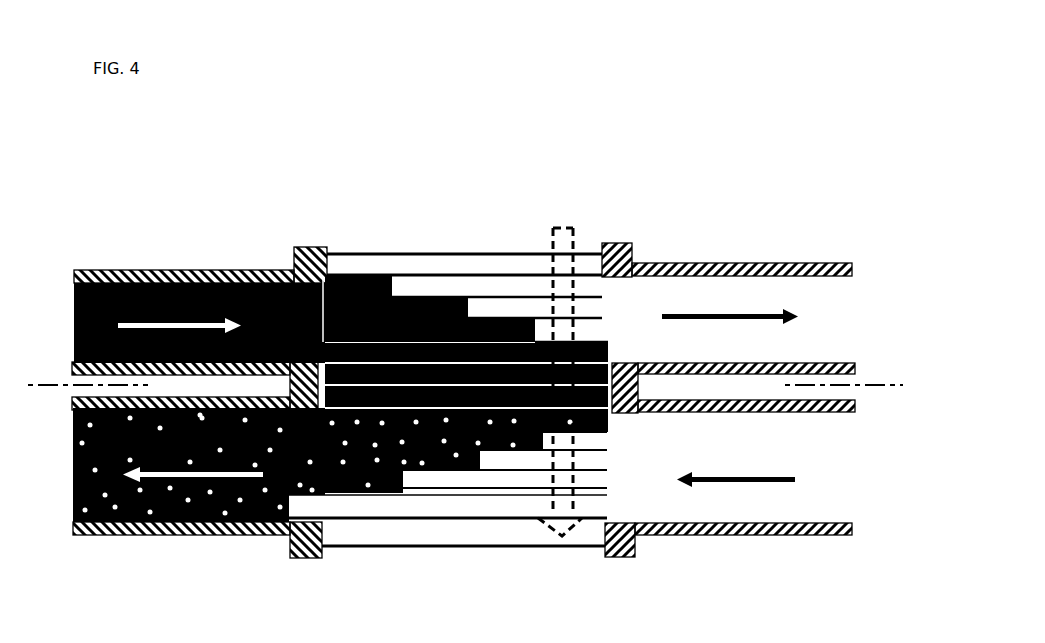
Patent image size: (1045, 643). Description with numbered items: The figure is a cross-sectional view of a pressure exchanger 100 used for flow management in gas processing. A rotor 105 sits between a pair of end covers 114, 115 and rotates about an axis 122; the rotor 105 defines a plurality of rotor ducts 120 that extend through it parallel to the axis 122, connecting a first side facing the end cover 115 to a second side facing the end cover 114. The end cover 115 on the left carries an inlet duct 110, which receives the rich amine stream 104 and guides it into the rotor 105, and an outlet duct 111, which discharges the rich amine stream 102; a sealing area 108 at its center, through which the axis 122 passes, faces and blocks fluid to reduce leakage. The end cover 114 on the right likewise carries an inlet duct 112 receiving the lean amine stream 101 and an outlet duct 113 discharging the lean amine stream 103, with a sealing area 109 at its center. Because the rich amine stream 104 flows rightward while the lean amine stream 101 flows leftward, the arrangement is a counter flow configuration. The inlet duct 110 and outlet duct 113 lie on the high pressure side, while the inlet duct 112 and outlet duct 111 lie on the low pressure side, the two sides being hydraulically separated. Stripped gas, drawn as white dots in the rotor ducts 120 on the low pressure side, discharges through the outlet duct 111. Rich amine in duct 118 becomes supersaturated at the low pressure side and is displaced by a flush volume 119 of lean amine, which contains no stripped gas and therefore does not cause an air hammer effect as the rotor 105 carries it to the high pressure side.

The pressure exchanger 100 is at (181, 151).
The lean amine stream 101 is at (833, 468).
The rich amine stream 102 is at (72, 470).
The lean amine stream 103 is at (845, 332).
The rich amine stream 104 is at (74, 330).
The rotor 105 is at (402, 252).
The sealing area 108 is at (290, 387).
The sealing area 109 is at (640, 382).
The inlet duct 110 is at (192, 270).
The outlet duct 111 is at (176, 536).
The inlet duct 112 is at (707, 535).
The outlet duct 113 is at (743, 263).
The end cover 114 is at (604, 243).
The end cover 115 is at (322, 250).
The duct 118 is at (573, 342).
The flush volume 119 is at (307, 505).
The rotor ducts 120 is at (458, 260).
The axis 122 is at (908, 393).